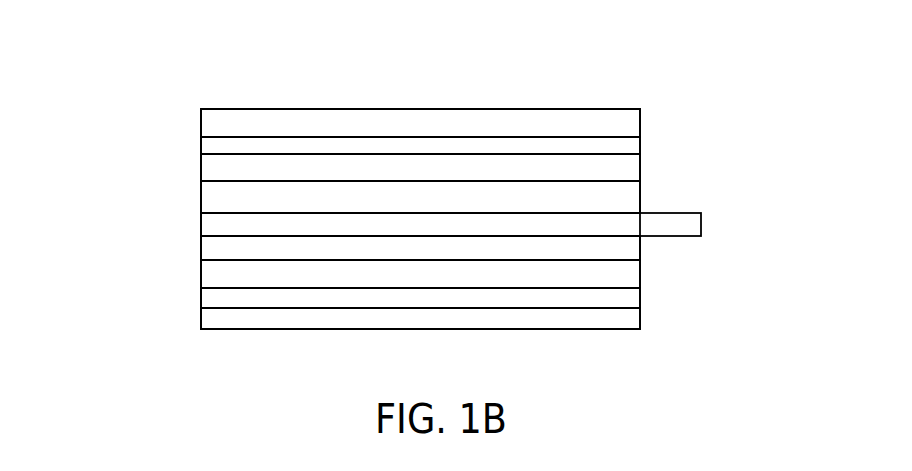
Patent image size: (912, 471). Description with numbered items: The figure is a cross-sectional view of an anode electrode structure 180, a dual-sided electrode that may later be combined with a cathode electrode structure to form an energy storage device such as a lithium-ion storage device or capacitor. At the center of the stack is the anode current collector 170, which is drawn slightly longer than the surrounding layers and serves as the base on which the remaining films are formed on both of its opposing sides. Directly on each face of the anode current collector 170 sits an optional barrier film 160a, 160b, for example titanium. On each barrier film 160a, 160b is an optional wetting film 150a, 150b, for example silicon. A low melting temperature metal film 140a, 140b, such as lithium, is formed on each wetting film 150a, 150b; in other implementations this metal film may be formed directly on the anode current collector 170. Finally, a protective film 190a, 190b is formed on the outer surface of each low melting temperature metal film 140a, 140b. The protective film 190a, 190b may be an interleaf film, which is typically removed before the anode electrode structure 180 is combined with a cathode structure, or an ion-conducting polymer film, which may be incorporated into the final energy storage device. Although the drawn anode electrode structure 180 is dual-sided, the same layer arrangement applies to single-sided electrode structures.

The anode electrode structure 180 is at (150, 59).
The protective film 190a is at (641, 123).
The low melting temperature metal film 140a is at (201, 146).
The wetting film 150a is at (641, 170).
The barrier film 160a is at (201, 202).
The anode current collector 170 is at (701, 221).
The barrier film 160b is at (201, 250).
The wetting film 150b is at (641, 272).
The low melting temperature metal film 140b is at (201, 303).
The protective film 190b is at (641, 320).